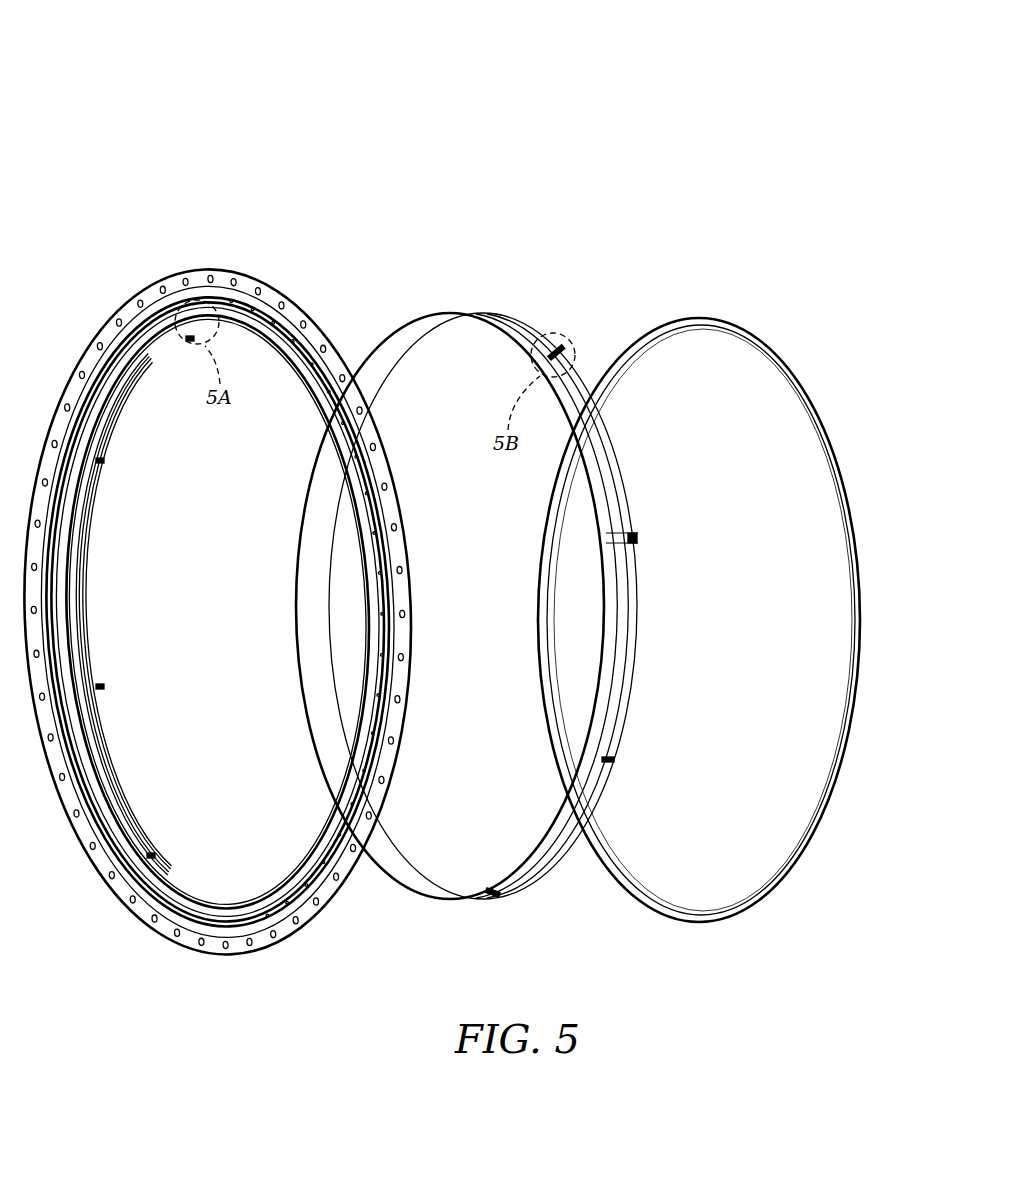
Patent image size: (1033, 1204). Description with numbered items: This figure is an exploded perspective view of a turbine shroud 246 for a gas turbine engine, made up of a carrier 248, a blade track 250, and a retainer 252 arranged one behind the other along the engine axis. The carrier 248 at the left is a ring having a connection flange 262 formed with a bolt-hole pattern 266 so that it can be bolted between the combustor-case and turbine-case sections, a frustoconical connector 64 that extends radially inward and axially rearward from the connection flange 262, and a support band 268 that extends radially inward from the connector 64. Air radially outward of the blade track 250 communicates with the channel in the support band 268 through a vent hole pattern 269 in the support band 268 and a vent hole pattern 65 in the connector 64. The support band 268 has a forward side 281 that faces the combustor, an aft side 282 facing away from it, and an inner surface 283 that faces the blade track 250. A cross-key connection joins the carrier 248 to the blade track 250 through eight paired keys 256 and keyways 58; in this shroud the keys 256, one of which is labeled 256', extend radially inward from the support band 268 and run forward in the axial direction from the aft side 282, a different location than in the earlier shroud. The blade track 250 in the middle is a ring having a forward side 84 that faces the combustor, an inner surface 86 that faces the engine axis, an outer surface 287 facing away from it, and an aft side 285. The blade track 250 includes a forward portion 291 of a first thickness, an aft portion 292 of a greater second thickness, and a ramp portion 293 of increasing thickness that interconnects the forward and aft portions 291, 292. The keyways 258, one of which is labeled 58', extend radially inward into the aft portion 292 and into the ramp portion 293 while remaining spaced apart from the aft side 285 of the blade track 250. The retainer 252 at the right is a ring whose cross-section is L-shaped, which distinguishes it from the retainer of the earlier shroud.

The turbine shroud 246 is at (148, 128).
The carrier 248 is at (256, 266).
The blade track 250 is at (487, 292).
The retainer 252 is at (712, 304).
The keys 256 is at (219, 597).
The tab 256' is at (411, 606).
The keyways 258 is at (296, 512).
The connection flange 262 is at (126, 296).
The bolt-hole pattern 266 is at (118, 322).
The support band 268 is at (58, 472).
The vent hole pattern 269 is at (372, 455).
The forward side 281 is at (256, 332).
The aft side 282 is at (88, 660).
The inner surface 283 is at (270, 368).
The aft side 285 is at (505, 340).
The outer surface 287 is at (470, 314).
The forward side 84 is at (478, 320).
The inner surface 86 is at (522, 336).
The connector 64 is at (386, 433).
The vent hole pattern 65 is at (386, 455).
The keyways 58 is at (479, 577).
The slot 58' is at (559, 562).
The forward portion 291 is at (606, 605).
The aft portion 292 is at (650, 578).
The ramp portion 293 is at (638, 634).